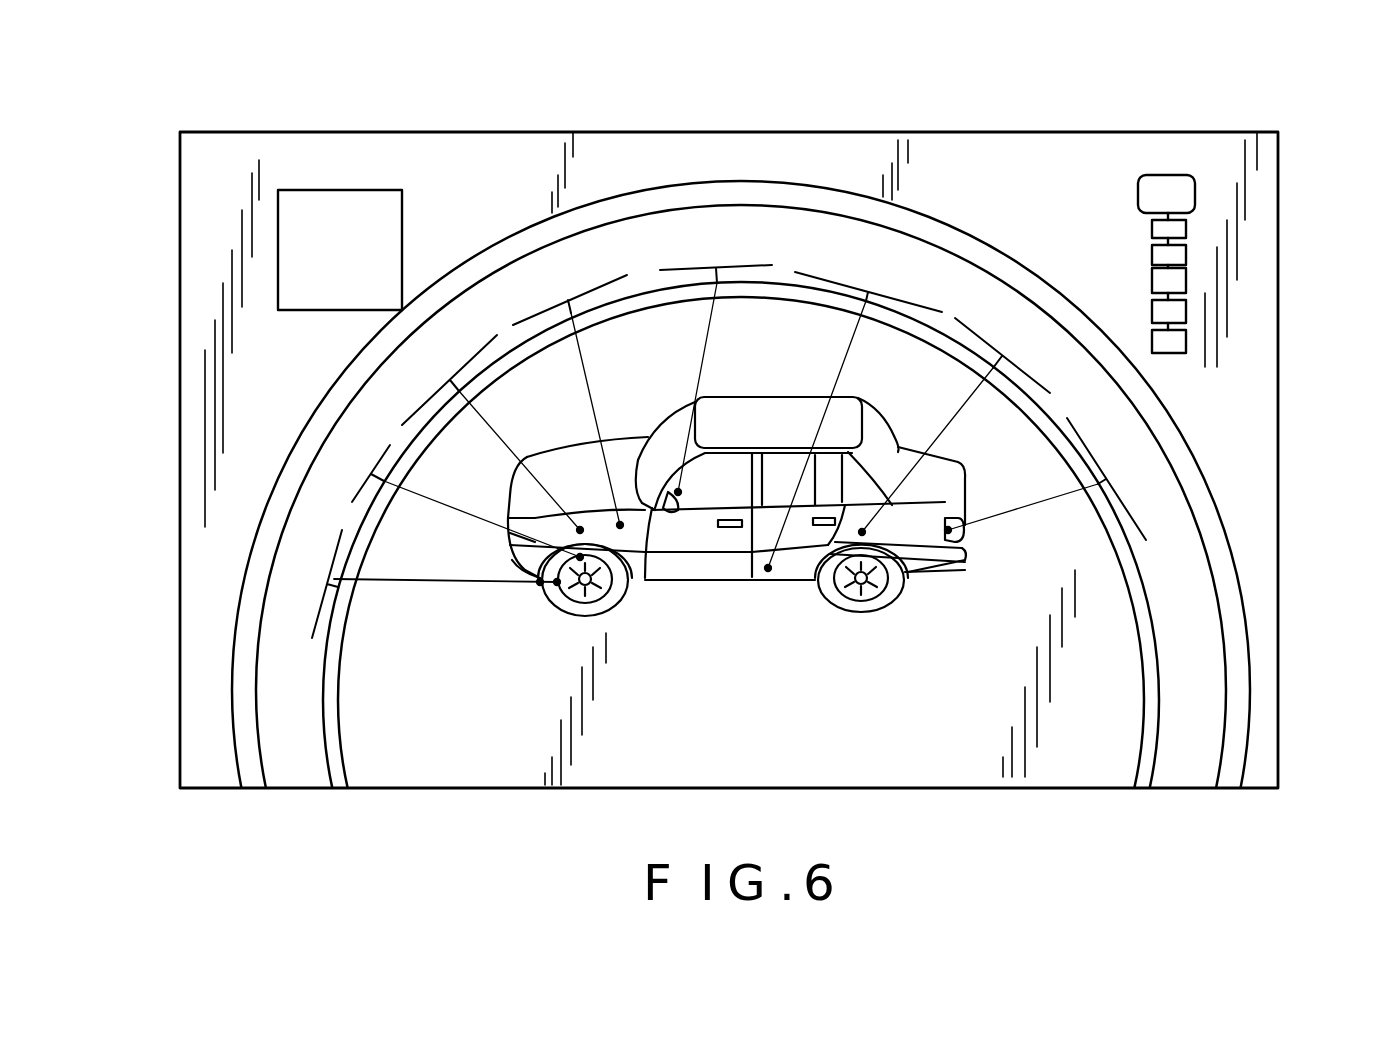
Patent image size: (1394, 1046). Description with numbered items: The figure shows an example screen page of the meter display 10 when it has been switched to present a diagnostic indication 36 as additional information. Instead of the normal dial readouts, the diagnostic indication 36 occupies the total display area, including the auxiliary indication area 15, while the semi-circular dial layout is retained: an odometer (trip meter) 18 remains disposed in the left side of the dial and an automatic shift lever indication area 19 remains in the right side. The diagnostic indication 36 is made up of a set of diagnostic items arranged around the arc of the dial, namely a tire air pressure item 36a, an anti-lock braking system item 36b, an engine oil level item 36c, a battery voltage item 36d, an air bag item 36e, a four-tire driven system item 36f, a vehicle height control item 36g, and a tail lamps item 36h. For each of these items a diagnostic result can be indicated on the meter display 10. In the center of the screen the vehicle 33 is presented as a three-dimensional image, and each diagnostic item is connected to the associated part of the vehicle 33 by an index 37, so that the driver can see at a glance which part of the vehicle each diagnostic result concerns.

The meter display 10 is at (806, 132).
The auxiliary indication area 15 is at (737, 615).
The odometer (trip meter) 18 is at (316, 193).
The automatic shift lever indication area 19 is at (1176, 168).
The vehicle 33 is at (693, 563).
The diagnostic indication 36 is at (290, 618).
The tire air pressure (TIRE AIR) 36a is at (303, 565).
The anti-lock braking system (ABS) 36b is at (343, 460).
The engine oil level (OIL LEVEL) 36c is at (448, 330).
The battery voltage (BATT. VOLTAGE) 36d is at (540, 253).
The air bag (AIR BAG) 36e is at (688, 240).
The four-tire driven system (4×4 SYSTEM) 36f is at (920, 272).
The vehicle height control (HEIGHT CONTROL) 36g is at (1020, 305).
The tail lamps (TAIL LIGHT) 36h is at (1137, 462).
The index 37 is at (432, 580).